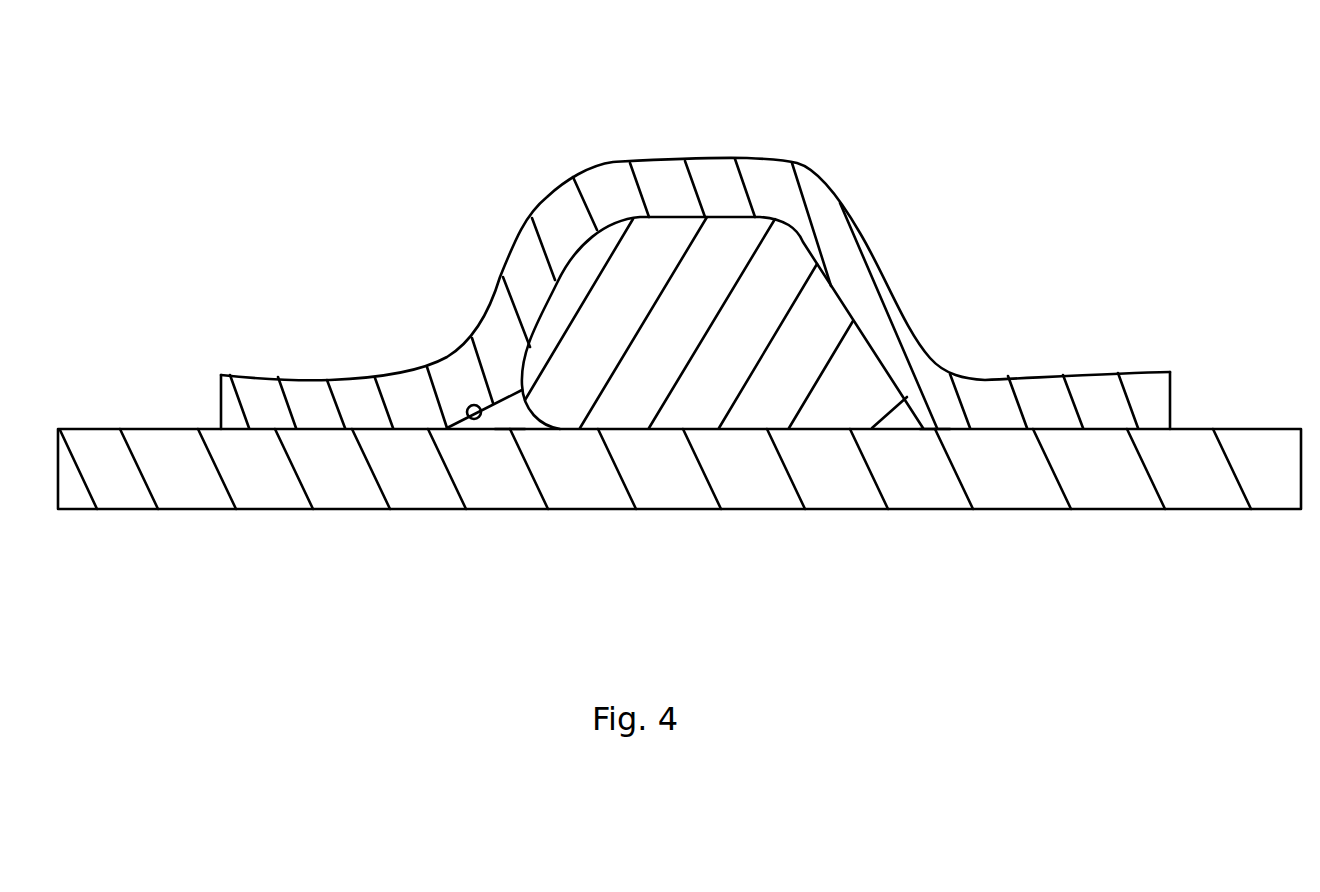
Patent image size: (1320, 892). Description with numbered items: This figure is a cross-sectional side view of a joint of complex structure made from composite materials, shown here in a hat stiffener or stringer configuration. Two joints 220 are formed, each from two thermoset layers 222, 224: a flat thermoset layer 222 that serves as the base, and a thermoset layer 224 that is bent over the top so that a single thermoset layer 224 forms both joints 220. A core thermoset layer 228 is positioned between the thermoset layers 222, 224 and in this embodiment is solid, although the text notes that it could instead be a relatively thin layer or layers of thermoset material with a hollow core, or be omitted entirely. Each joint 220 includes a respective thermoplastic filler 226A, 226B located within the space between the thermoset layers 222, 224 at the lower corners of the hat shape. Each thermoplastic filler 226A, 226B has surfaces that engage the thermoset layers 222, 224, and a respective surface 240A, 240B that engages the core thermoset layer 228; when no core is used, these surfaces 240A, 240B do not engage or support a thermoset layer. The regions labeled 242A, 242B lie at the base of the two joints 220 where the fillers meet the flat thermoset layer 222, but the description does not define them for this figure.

The joint 220 is at (530, 373).
The thermoset layer 222 is at (253, 512).
The thermoset layer 224 is at (613, 162).
The thermoplastic filler 226A is at (500, 407).
The thermoplastic filler 226B is at (900, 398).
The core thermoset layer 228 is at (805, 275).
The surface 240A is at (537, 421).
The surface 240B is at (873, 428).
The first contact region 242A is at (507, 429).
The second contact region 242B is at (935, 430).